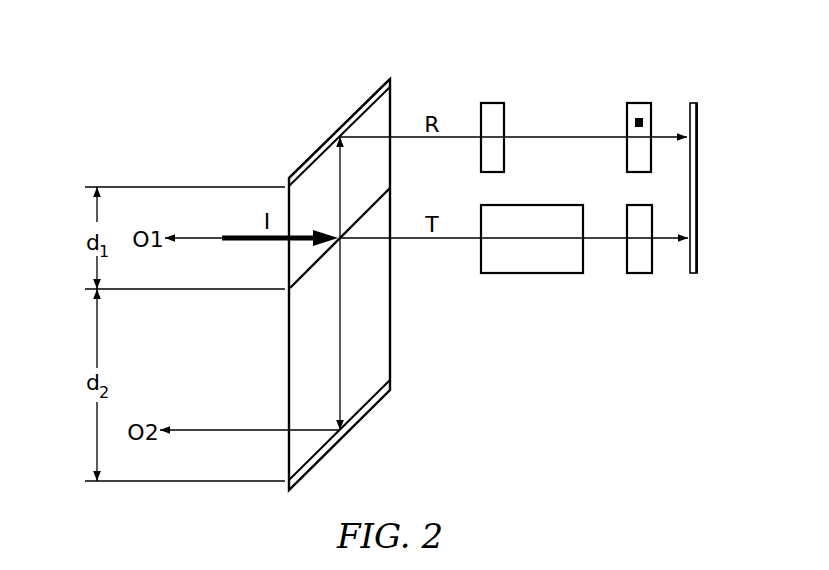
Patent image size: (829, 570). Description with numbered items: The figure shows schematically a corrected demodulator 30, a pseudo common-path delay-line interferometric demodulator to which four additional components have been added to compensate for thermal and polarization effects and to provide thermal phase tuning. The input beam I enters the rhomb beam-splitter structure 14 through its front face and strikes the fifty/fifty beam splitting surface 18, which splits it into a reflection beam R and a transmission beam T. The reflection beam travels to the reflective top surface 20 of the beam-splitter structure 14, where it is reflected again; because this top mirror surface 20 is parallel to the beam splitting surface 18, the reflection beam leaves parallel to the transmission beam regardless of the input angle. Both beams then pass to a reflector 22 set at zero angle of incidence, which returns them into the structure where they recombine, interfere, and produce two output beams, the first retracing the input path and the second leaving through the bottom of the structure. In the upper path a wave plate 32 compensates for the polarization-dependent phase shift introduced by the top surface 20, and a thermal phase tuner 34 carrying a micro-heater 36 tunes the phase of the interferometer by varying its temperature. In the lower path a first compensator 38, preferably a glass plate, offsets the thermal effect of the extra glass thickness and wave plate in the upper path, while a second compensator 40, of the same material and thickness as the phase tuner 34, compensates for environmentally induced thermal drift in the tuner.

The rhomb beam-splitter structure 14 is at (393, 359).
The beam splitting surface 18 is at (309, 272).
The reflective top surface 20 is at (388, 109).
The reflector 22 is at (688, 197).
The corrected demodulator 30 is at (233, 96).
The wave plate 32 is at (492, 102).
The thermal phase tuner 34 is at (640, 102).
The micro-heater 36 is at (633, 123).
The first compensator 38 is at (532, 275).
The second compensator 40 is at (638, 275).